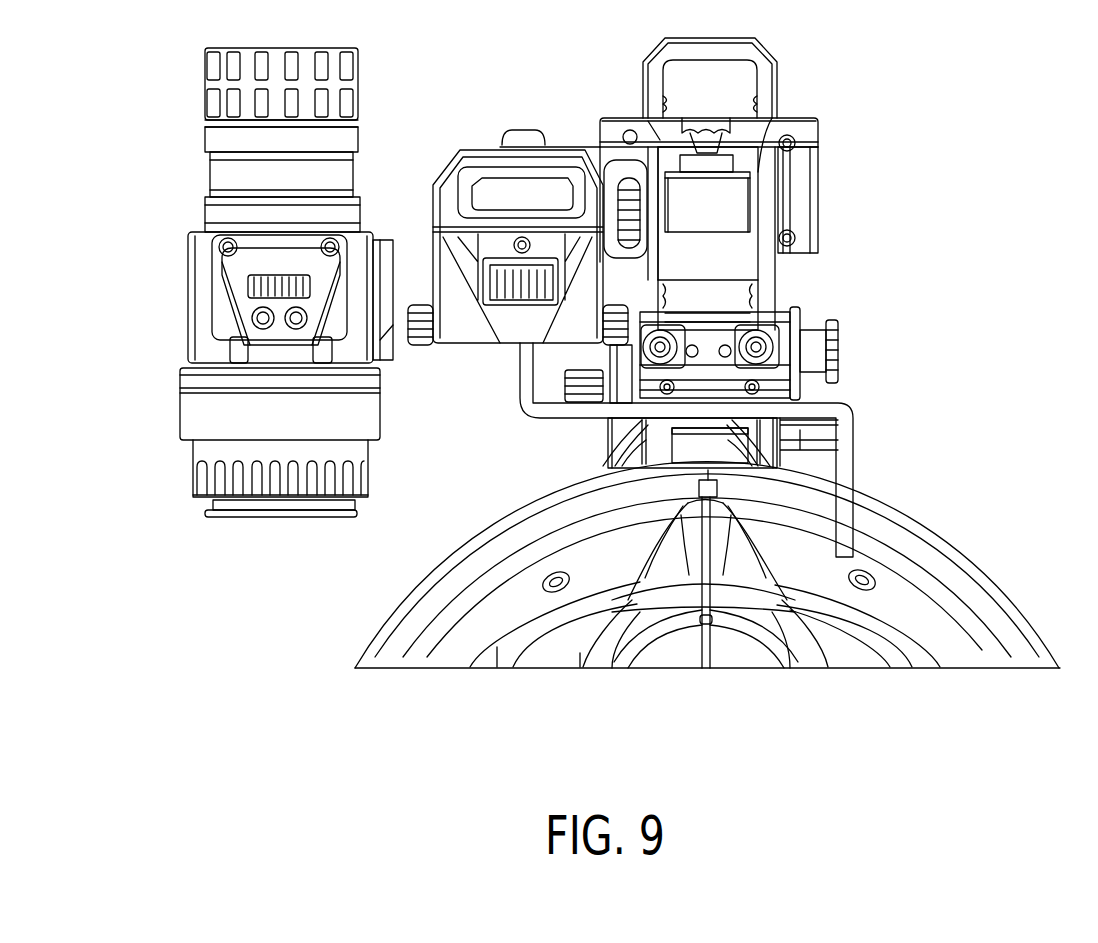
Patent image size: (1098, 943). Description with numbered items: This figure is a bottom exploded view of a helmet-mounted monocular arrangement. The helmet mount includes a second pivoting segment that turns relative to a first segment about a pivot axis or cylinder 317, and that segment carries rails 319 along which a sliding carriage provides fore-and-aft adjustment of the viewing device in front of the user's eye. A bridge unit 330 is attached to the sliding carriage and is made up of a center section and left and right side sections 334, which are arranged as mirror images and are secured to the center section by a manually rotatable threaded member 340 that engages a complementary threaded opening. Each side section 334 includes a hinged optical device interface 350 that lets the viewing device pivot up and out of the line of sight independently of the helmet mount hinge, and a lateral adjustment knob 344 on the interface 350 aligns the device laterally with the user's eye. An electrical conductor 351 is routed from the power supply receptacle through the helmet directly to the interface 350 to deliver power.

The pivot axis or cylinder 317 is at (840, 350).
The rails 319 is at (653, 95).
The bridge unit 330 is at (740, 255).
The side sections 334 is at (608, 155).
The threaded member 340 is at (630, 197).
The lateral adjustment knob 344 is at (425, 353).
The hinged optical device interface 350 is at (463, 260).
The electrical conductor 351 is at (847, 463).